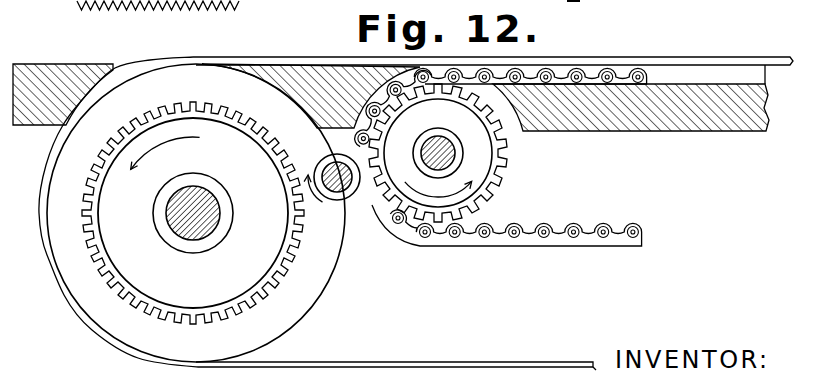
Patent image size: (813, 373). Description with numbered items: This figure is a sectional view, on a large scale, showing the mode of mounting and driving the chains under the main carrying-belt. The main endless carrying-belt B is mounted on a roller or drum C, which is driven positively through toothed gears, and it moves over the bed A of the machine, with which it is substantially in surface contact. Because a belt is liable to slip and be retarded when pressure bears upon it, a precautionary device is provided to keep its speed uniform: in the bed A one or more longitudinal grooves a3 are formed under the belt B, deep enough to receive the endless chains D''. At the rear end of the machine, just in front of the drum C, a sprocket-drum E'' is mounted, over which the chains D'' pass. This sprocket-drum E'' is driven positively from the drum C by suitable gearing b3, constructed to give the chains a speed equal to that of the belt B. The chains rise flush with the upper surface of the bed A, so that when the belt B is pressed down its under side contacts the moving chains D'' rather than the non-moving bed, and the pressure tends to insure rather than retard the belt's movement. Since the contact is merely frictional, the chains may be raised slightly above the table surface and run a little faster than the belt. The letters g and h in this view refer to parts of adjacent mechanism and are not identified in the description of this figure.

The bed A is at (610, 122).
The main endless carrying-belt B is at (344, 57).
The roller or drum C is at (193, 202).
The gearing b3 is at (308, 183).
The longitudinal groove a3 is at (700, 75).
The endless chains D'' is at (501, 143).
The sprocket-drum E'' is at (453, 153).
The lever (fragment) g is at (582, 11).
The spring h is at (172, 12).